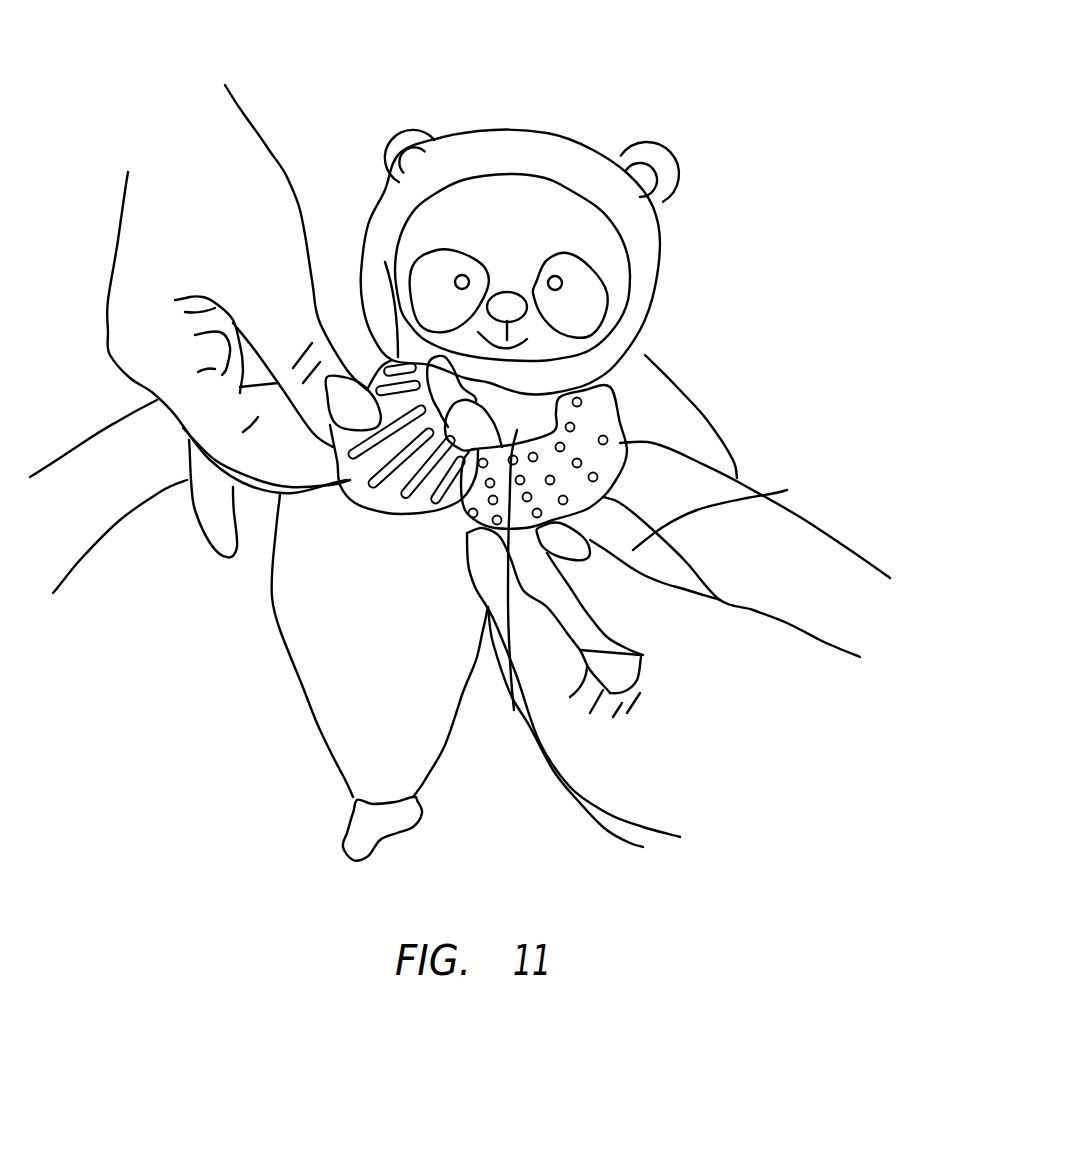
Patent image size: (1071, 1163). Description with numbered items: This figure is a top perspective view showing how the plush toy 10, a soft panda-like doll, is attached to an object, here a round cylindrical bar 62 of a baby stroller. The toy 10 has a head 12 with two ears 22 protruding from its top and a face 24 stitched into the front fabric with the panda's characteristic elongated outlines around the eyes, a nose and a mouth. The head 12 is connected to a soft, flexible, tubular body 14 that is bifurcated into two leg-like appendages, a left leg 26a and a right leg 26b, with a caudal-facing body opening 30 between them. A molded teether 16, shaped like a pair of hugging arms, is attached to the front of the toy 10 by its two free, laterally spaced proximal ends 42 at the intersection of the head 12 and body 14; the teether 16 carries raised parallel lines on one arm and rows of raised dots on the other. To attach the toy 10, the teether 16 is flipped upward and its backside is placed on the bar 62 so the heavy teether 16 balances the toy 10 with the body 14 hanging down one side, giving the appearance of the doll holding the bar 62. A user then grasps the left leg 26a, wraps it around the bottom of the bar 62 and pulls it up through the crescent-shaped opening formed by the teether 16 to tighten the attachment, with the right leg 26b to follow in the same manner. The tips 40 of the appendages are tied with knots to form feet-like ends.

The plush toy 10 is at (575, 201).
The head 12 is at (528, 128).
The body 14 is at (700, 444).
The teether 16 is at (607, 427).
The ears 22 is at (632, 143).
The face 24 is at (630, 254).
The left leg 26a is at (787, 490).
The right leg 26b is at (283, 647).
The body opening 30 is at (514, 710).
The tips of the appendages 40 is at (460, 427).
The proximal ends of the teether 42 is at (385, 262).
The bar 62 is at (790, 573).